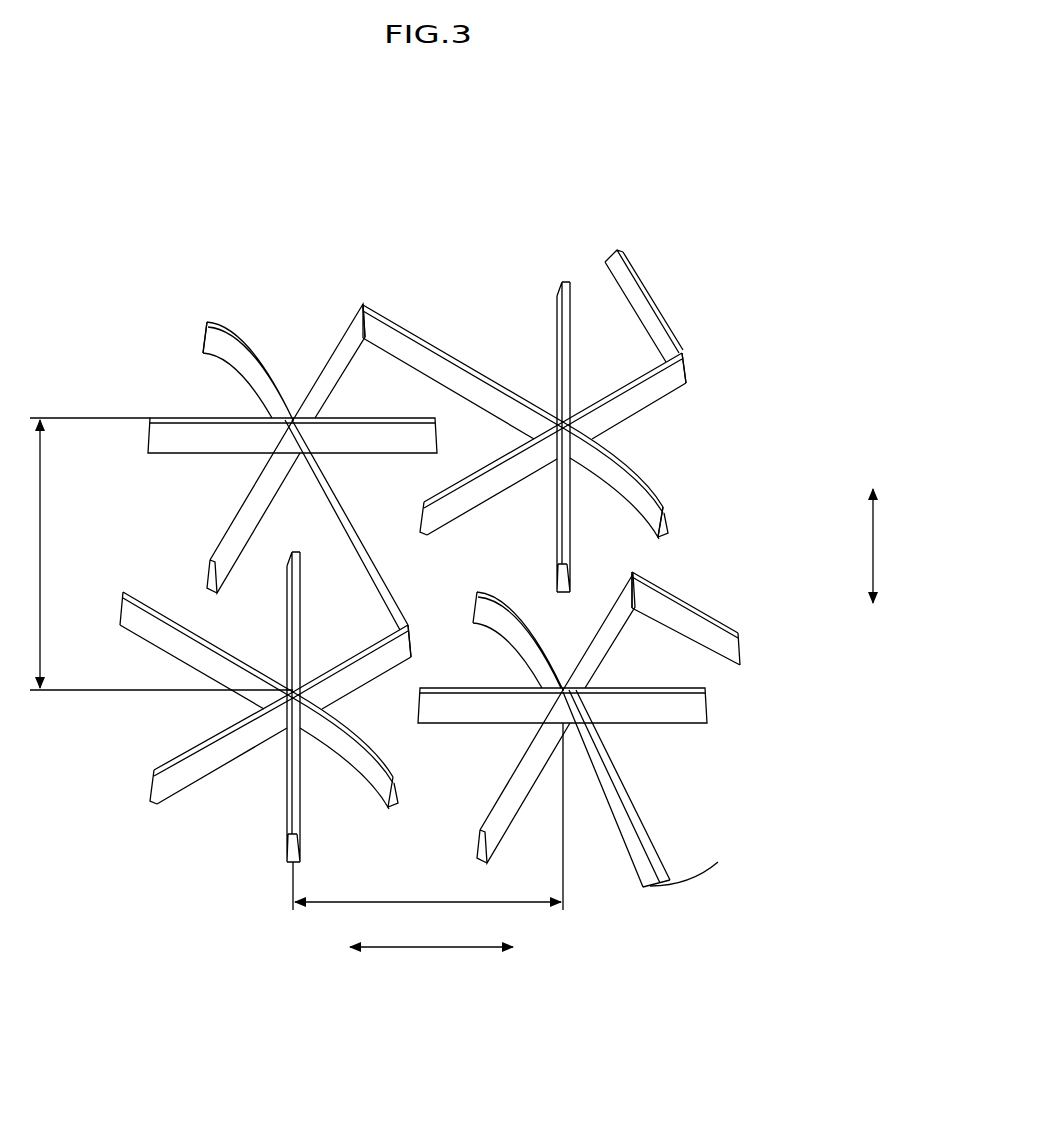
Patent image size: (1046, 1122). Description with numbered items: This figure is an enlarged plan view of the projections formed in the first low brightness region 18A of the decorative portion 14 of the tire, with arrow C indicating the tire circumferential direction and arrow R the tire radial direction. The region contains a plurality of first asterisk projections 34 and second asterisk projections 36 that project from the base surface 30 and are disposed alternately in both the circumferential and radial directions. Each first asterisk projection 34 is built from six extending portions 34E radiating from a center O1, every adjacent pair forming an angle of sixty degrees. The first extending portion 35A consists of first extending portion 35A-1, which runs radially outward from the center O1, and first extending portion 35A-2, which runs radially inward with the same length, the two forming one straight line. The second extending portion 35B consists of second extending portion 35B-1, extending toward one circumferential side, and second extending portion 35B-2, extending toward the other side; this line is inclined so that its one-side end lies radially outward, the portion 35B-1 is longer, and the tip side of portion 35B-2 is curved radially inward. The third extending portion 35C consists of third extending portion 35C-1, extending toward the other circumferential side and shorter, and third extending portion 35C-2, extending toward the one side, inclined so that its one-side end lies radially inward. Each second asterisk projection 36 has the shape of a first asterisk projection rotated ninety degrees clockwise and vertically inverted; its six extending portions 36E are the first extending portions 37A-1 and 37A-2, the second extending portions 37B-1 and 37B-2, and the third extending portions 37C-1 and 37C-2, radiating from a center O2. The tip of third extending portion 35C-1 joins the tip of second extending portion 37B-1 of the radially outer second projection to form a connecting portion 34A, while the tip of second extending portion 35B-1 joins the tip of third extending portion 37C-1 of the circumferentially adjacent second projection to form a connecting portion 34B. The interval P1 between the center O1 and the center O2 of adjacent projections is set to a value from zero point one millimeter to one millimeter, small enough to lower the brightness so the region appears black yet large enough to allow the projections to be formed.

The decorative portion 14 is at (504, 181).
The first low brightness region 18A is at (802, 202).
The base surface 30 is at (660, 437).
The first asterisk projection 34 is at (712, 215).
The connecting portion 34A is at (690, 348).
The connecting portion 34B is at (361, 302).
The extending portion 34E is at (692, 510).
The first extending portion 35A is at (557, 292).
The first extending portion 35A-1 is at (571, 290).
The first extending portion 35A-2 is at (571, 563).
The second extending portion 35B is at (406, 328).
The second extending portion 35B-1 is at (434, 333).
The second extending portion 35B-2 is at (656, 481).
The third extending portion 35C is at (425, 504).
The third extending portion 35C-1 is at (650, 405).
The third extending portion 35C-2 is at (483, 495).
The second asterisk projection 36 is at (198, 270).
The extending portion 36E is at (201, 330).
The first extending portion 37A-1 is at (348, 418).
The first extending portion 37A-2 is at (212, 418).
The second extending portion 37B-1 is at (367, 537).
The second extending portion 37B-2 is at (245, 342).
The third extending portion 37C-1 is at (347, 332).
The third extending portion 37C-2 is at (230, 545).
The center O1 is at (558, 415).
The center O2 is at (288, 447).
The interval P1 is at (285, 664).
The arrow indicating tire circumferential direction C is at (426, 950).
The arrow indicating tire radial direction R is at (875, 546).